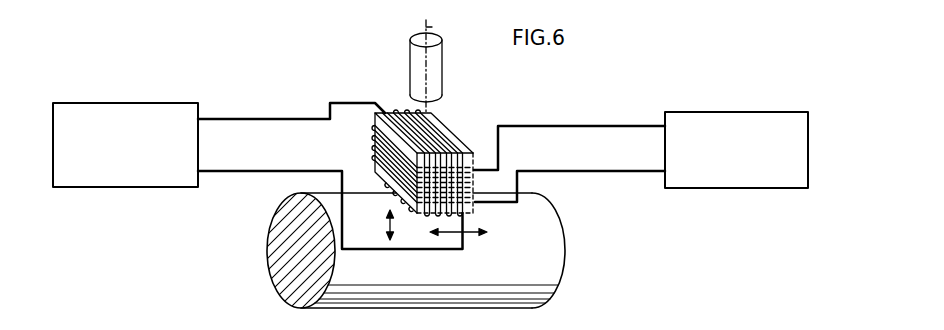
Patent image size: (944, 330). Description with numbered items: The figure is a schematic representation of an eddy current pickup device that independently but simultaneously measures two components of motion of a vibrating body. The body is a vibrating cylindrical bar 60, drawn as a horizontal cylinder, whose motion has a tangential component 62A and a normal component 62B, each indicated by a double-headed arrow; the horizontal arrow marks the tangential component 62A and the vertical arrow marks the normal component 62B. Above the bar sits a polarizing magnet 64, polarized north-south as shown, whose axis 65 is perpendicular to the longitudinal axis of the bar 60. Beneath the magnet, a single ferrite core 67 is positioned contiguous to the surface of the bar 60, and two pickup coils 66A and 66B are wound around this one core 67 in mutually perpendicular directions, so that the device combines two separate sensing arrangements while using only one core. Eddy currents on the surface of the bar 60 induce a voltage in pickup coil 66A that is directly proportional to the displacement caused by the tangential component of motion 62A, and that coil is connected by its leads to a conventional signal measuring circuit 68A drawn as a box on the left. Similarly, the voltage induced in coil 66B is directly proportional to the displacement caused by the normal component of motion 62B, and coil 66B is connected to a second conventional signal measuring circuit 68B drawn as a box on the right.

The vibrating cylindrical bar 60 is at (547, 257).
The tangential component of motion 62A is at (455, 234).
The normal component of motion 62B is at (388, 221).
The polarizing magnet 64 is at (437, 52).
The axis 65 is at (432, 25).
The pickup coil 66A is at (385, 110).
The pickup coil 66B is at (457, 170).
The ferrite core 67 is at (428, 111).
The signal measuring circuit 68A is at (132, 105).
The signal measuring circuit 68B is at (690, 120).